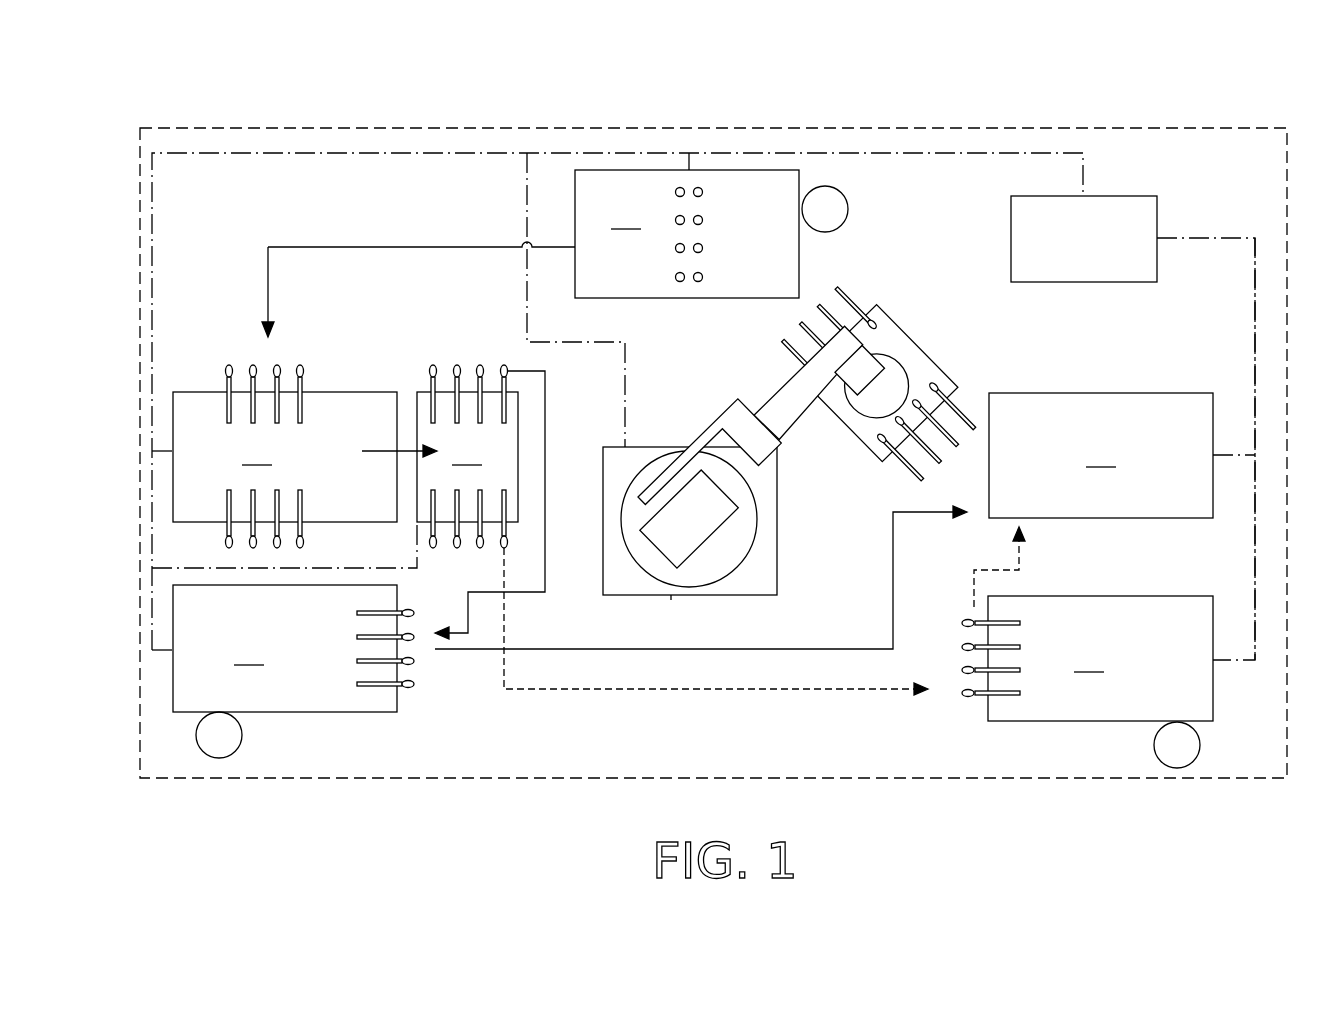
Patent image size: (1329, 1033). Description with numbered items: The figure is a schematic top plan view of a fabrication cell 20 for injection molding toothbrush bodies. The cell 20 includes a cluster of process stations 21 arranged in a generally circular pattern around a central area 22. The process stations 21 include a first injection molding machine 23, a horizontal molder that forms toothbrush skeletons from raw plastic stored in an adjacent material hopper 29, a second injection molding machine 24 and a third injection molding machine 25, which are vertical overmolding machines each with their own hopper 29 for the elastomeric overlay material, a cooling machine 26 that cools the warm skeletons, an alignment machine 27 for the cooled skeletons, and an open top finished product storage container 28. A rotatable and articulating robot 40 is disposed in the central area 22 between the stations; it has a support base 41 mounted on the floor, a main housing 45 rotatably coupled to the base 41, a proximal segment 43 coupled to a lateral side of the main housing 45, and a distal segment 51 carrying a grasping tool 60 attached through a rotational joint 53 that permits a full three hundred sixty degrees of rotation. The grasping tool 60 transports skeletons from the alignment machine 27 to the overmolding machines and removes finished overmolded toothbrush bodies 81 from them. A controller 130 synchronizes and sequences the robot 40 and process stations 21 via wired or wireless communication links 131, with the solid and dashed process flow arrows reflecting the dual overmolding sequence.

The fabrication cell 20 is at (200, 78).
The process stations 21 is at (1108, 762).
The central area 22 is at (828, 616).
The first injection molding machine 23 is at (687, 225).
The second injection molding machine 24 is at (285, 648).
The third injection molding machine 25 is at (1100, 658).
The cooling machine 26 is at (285, 457).
The alignment machine 27 is at (467, 457).
The finished product storage container 28 is at (1101, 455).
The material hopper 29 is at (842, 192).
The robot 40 is at (598, 620).
The support base 41 is at (671, 600).
The proximal segment 43 is at (702, 437).
The main housing 45 is at (754, 542).
The distal segment 51 is at (785, 383).
The rotational joint 53 is at (870, 410).
The grasping tool 60 is at (915, 345).
The overmolded toothbrush bodies 81 is at (409, 697).
The controller 130 is at (1157, 222).
The communication links 131 is at (1255, 343).